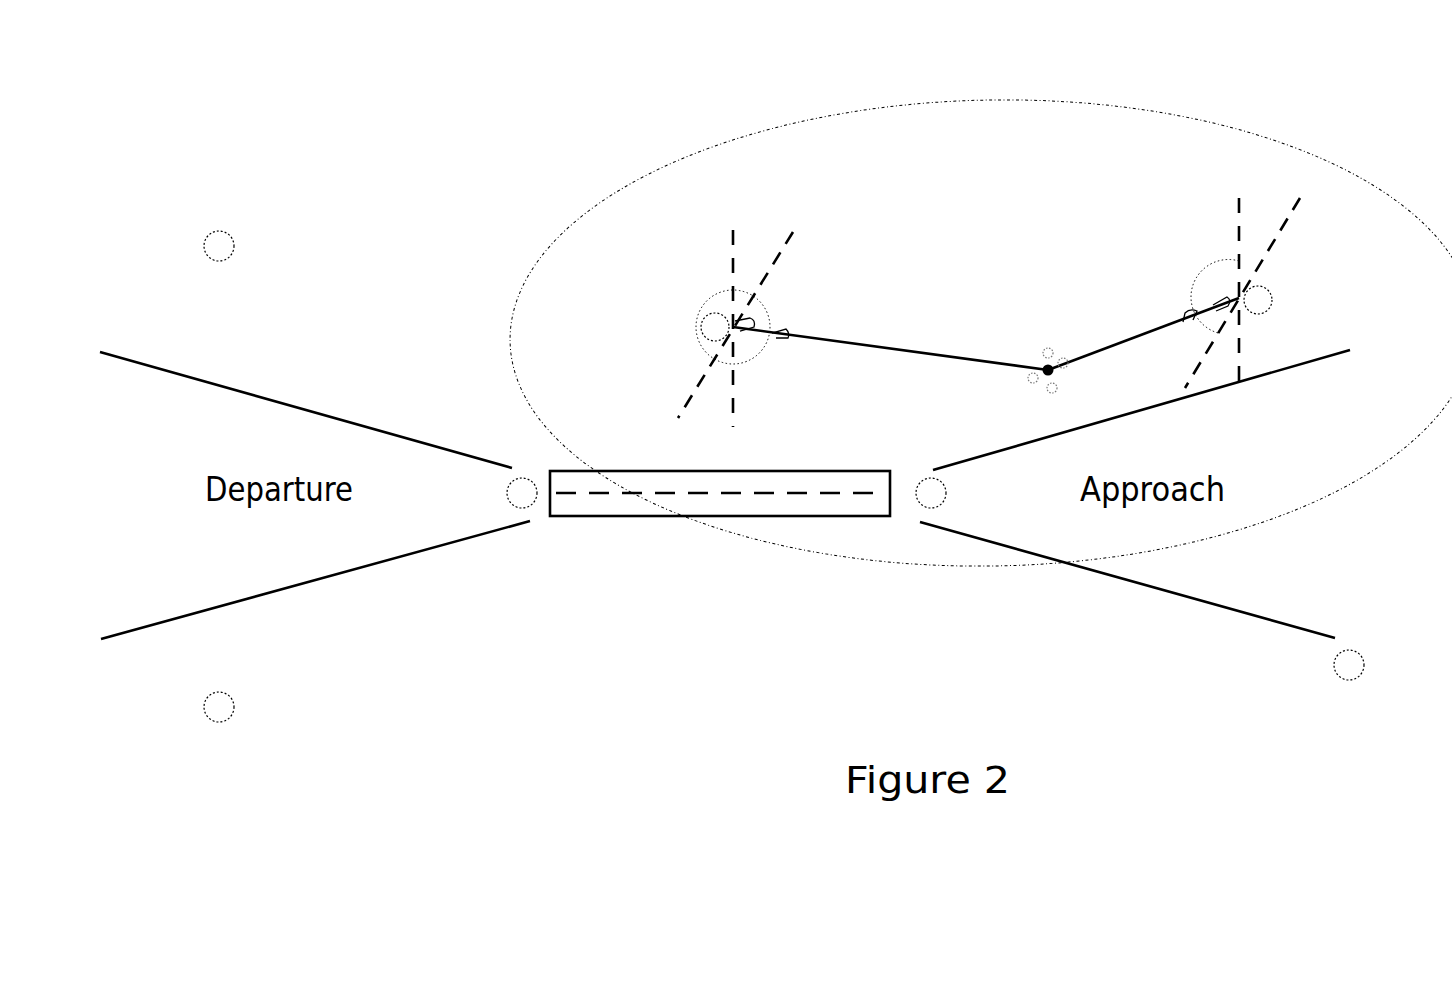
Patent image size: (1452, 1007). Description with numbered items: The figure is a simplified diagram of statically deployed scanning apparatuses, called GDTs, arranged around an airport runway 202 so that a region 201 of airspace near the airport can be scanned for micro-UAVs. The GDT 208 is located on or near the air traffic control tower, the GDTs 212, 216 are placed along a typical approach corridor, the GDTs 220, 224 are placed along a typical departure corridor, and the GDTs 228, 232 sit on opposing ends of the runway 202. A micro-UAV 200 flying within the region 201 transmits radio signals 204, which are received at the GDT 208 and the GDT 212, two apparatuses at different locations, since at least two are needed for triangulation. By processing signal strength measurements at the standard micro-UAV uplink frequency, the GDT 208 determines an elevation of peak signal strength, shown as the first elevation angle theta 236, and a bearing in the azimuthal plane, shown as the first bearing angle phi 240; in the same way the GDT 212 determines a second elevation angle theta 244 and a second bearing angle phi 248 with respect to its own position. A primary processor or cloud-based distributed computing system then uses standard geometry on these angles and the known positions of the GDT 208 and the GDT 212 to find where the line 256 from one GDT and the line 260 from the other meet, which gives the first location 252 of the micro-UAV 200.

The micro-UAV 200 is at (1048, 350).
The region of airspace 201 is at (656, 166).
The airport runway 202 is at (725, 471).
The radio signals 204 is at (760, 283).
The GDT 208 is at (712, 314).
The GDT 212 is at (1252, 285).
The GDT 216 is at (1360, 651).
The GDT 220 is at (229, 233).
The GDT 224 is at (229, 694).
The GDT 228 is at (530, 478).
The GDT 232 is at (933, 478).
The elevation angle θ1 236 is at (803, 283).
The bearing angle φ1 240 is at (762, 378).
The elevation angle θ2 244 is at (1188, 253).
The bearing angle φ2 248 is at (1181, 342).
The first location 252 is at (1045, 352).
The line 256 is at (900, 345).
The line 260 is at (1124, 348).